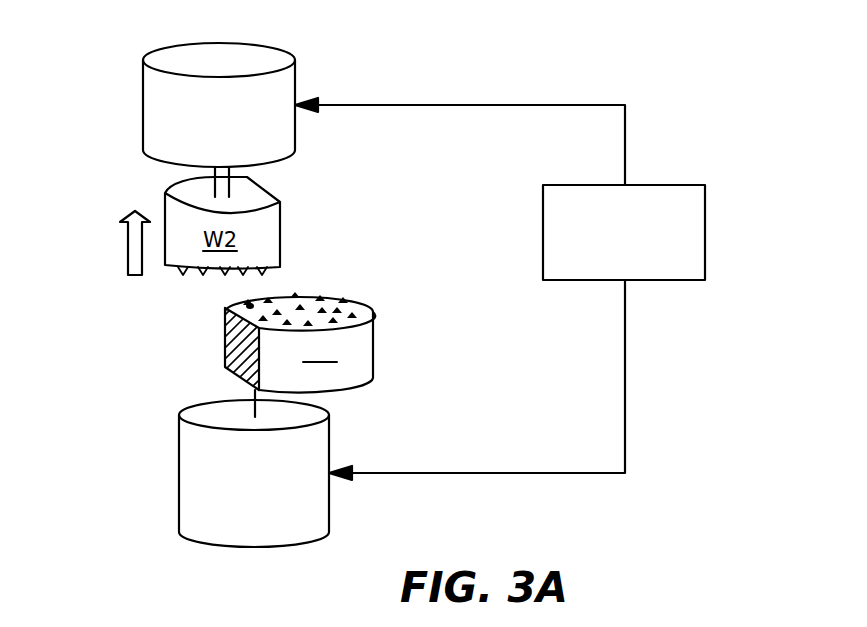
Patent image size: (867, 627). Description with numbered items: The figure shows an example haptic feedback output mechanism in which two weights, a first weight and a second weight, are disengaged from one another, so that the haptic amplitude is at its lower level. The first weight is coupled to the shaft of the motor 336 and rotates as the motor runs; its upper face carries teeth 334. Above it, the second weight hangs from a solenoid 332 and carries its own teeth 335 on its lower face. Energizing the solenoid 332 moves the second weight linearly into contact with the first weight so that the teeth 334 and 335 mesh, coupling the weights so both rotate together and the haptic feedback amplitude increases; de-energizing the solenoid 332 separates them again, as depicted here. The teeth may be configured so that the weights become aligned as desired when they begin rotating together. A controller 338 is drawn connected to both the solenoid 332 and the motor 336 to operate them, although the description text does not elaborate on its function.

The solenoid 332 is at (160, 104).
The teeth 334 is at (328, 300).
The teeth 335 is at (200, 273).
The motor 336 is at (205, 488).
The controller 338 is at (567, 268).